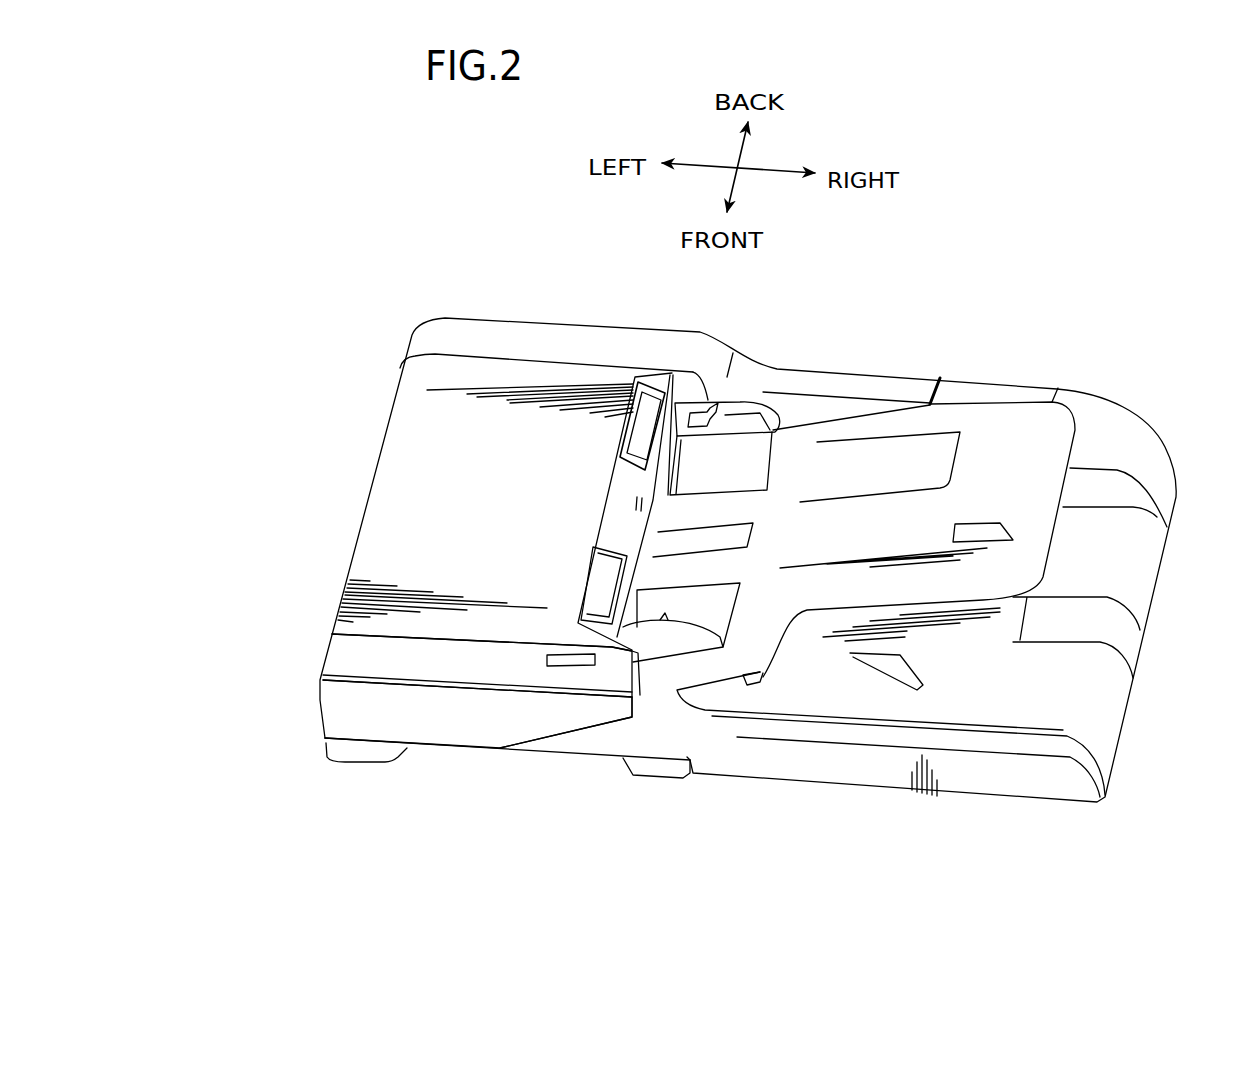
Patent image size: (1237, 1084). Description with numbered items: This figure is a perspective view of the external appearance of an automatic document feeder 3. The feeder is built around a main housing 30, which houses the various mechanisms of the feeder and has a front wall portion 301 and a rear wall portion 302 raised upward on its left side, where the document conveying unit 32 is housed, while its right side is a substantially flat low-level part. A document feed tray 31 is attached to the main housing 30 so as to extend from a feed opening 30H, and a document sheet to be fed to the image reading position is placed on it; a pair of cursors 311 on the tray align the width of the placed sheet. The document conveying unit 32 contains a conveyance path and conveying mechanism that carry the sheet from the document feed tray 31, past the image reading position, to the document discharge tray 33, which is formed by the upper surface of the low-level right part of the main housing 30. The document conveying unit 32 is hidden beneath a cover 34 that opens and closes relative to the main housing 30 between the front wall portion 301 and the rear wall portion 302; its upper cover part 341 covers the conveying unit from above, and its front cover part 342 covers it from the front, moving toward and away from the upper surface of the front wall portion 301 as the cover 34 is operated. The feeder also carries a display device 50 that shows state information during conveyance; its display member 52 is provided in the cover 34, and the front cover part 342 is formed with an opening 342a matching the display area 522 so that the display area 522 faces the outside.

The automatic document feeder 3 is at (882, 328).
The main housing 30 is at (660, 794).
The feed opening 30H is at (642, 514).
The document feed tray 31 is at (992, 446).
The cursors 311 is at (742, 402).
The document conveying unit 32 is at (467, 418).
The document discharge tray 33 is at (973, 695).
The cover 34 is at (410, 485).
The front wall portion 301 is at (342, 712).
The rear wall portion 302 is at (477, 343).
The upper cover part 341 is at (380, 562).
The front cover part 342 is at (433, 662).
The opening 342a is at (517, 657).
The display device 50 is at (560, 630).
The display member 52 is at (577, 765).
The display area 522 is at (567, 667).